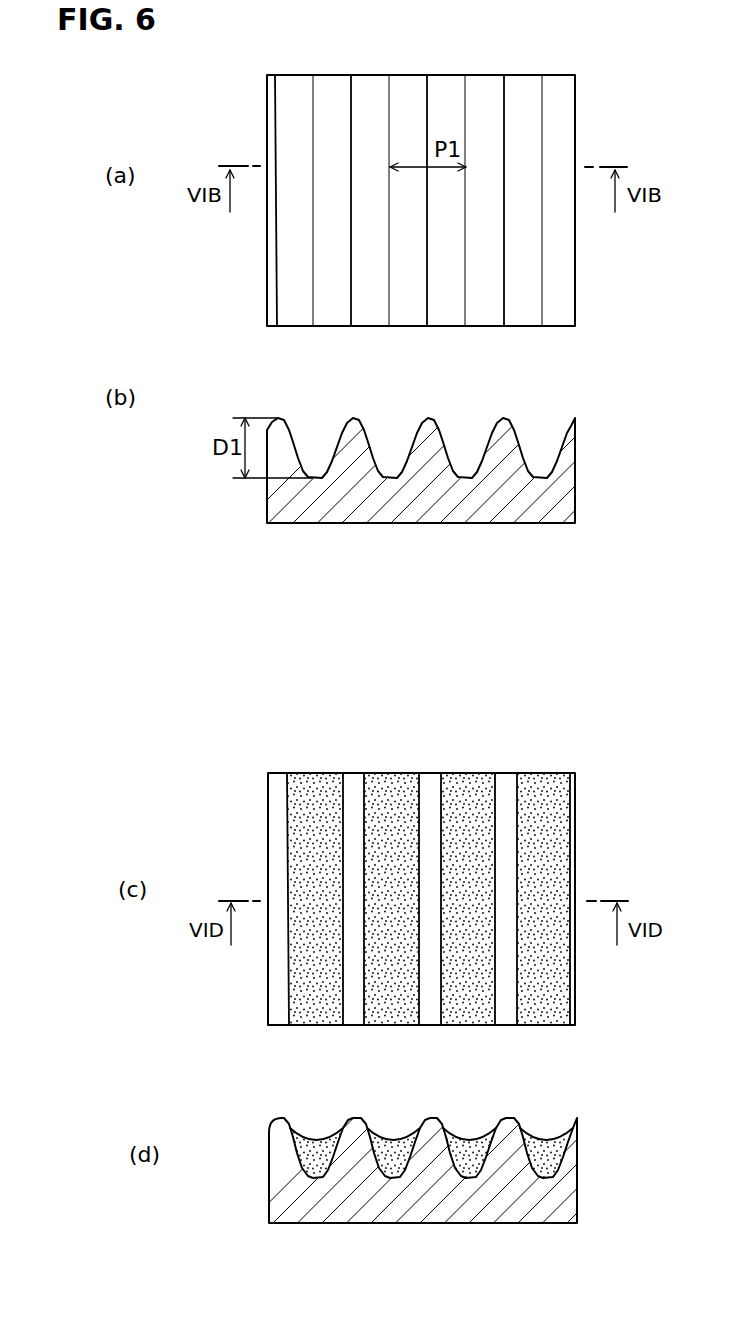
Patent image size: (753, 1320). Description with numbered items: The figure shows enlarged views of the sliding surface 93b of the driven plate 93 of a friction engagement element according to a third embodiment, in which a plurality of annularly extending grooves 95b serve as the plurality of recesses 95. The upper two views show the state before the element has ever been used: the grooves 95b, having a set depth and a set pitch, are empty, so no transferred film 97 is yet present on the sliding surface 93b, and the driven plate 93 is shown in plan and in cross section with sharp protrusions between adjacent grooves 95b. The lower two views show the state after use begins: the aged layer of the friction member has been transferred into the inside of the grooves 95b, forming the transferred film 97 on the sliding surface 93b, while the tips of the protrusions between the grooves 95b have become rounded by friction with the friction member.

The driven plate 93 is at (570, 500).
The sliding surface 93b is at (528, 93).
The grooves 95b is at (538, 457).
The recesses 95 is at (538, 457).
The transferred film 97 is at (467, 1140).